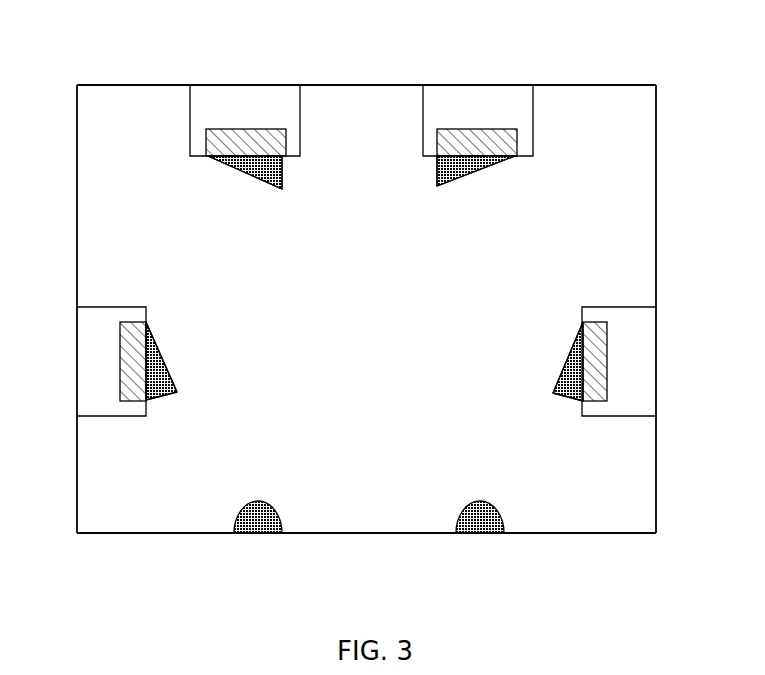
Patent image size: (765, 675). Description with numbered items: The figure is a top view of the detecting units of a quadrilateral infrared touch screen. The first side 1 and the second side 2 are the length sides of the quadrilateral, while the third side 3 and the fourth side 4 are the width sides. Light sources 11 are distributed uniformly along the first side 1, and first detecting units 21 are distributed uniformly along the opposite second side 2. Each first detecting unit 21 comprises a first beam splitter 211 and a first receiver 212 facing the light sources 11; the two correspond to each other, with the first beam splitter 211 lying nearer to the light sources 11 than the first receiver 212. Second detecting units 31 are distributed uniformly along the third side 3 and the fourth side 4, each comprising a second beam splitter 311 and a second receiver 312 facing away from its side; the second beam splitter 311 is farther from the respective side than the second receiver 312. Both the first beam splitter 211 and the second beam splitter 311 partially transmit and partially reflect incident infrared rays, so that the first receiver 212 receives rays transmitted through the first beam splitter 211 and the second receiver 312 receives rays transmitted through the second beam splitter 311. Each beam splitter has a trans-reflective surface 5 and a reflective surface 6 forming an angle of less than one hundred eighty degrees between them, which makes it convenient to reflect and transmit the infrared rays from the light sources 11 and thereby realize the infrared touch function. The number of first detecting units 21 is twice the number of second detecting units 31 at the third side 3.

The first side 1 is at (158, 533).
The second side 2 is at (607, 85).
The third side 3 is at (77, 188).
The fourth side 4 is at (656, 472).
The light source 11 is at (287, 533).
The first detecting unit 21 is at (247, 100).
The first beam splitter 211 is at (257, 167).
The first receiver 212 is at (260, 143).
The second detecting unit 31 is at (100, 362).
The second beam splitter 311 is at (155, 375).
The second receiver 312 is at (135, 380).
The trans-reflective surface 5 is at (240, 170).
The reflective surface 6 is at (282, 185).